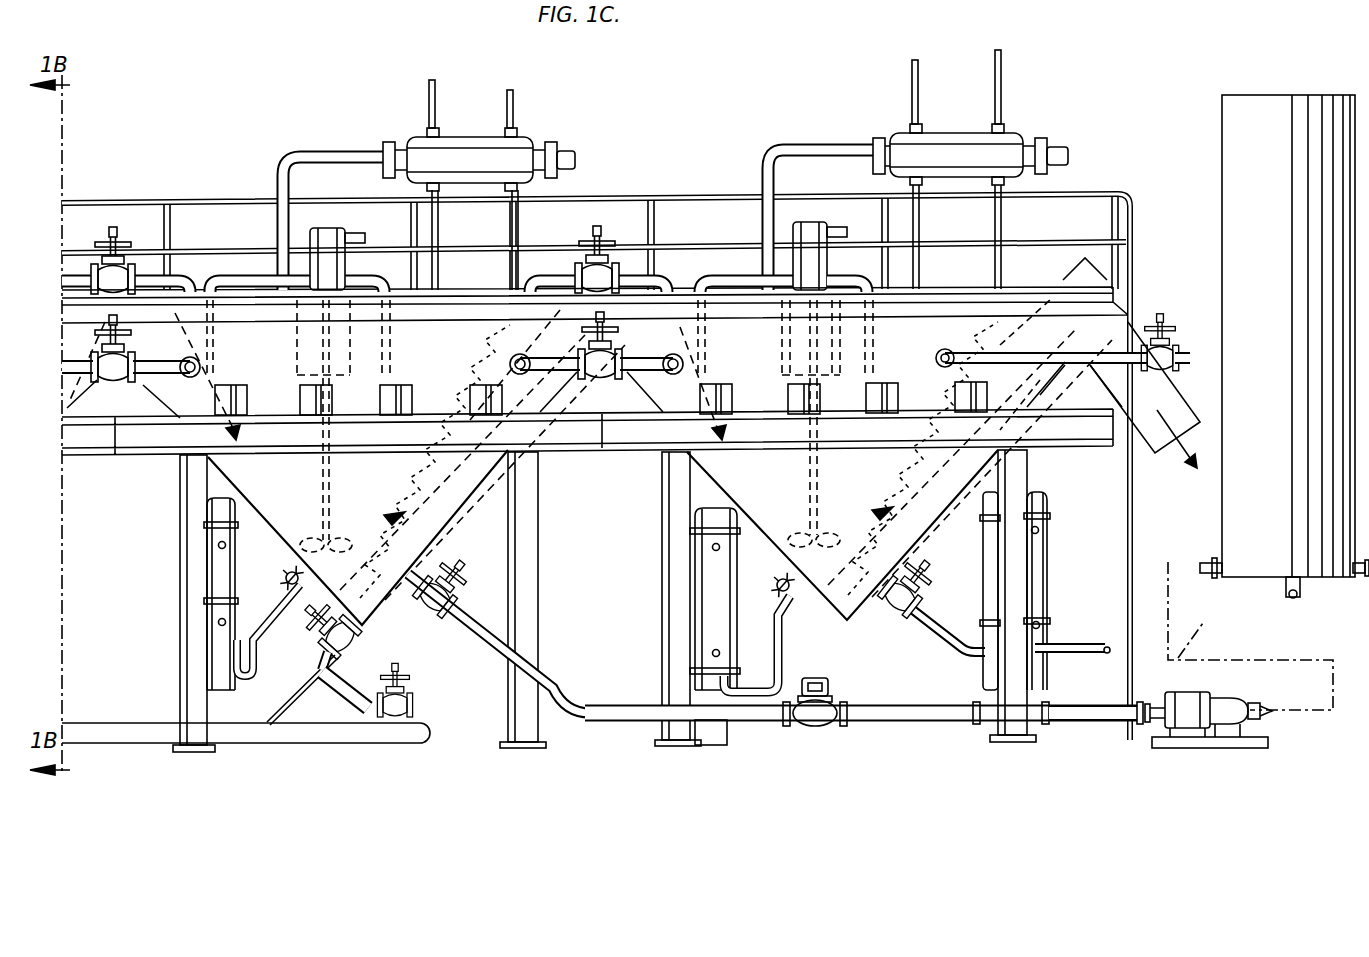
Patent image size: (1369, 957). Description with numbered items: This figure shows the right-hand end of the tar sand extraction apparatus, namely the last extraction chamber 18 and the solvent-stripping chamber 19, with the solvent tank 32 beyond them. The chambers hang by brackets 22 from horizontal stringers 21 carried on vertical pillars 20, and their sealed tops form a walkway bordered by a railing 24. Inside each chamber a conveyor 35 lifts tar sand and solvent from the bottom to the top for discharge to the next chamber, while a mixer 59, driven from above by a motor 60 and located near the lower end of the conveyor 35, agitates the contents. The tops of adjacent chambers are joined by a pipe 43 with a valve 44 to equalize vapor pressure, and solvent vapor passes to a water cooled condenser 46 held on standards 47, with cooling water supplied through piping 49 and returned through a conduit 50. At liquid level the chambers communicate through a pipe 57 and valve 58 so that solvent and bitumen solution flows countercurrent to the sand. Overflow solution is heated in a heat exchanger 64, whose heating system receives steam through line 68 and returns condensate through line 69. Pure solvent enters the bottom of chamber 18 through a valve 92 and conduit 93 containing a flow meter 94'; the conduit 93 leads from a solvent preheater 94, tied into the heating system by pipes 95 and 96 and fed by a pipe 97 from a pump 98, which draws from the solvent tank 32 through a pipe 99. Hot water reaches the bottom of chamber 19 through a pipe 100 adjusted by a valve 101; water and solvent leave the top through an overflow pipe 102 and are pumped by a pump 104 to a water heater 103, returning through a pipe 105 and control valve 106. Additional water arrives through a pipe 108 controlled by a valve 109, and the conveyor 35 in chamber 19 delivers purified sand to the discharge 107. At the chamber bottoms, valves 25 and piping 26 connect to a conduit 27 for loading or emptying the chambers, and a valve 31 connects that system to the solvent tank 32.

The extraction chamber 18 is at (242, 481).
The chamber 19 is at (728, 477).
The vertical pillar 20 is at (540, 527).
The horizontal stringer 21 is at (583, 450).
The bracket 22 is at (893, 380).
The railing 24 is at (690, 193).
The valve 25 is at (355, 645).
The piping 26 is at (348, 698).
The conduit 27 is at (340, 742).
The valve 31 is at (1299, 598).
The solvent tank 32 is at (1268, 268).
The conveyor 35 is at (1025, 330).
The pipe 43 is at (162, 278).
The valve 44 is at (118, 266).
The water cooled condenser 46 is at (480, 140).
The standard 47 is at (518, 236).
The piping 49 is at (430, 110).
The conduit 50 is at (513, 106).
The pipe 57 is at (155, 376).
The valve 58 is at (122, 360).
The mixer 59 is at (820, 535).
The motor 60 is at (805, 226).
The heat exchanger 64 is at (225, 572).
The steam line 68 is at (218, 545).
The condensate line 69 is at (218, 623).
The valve 92 is at (450, 603).
The conduit 93 is at (598, 710).
The solvent preheater 94 is at (1038, 596).
The flow meter 94' is at (837, 693).
The pipe 95 is at (1040, 531).
The pipe 96 is at (1040, 626).
The pipe 97 is at (1086, 705).
The pump 98 is at (1193, 694).
The pipe 99 is at (1360, 576).
The pipe 100 is at (940, 635).
The valve 101 is at (888, 615).
The overflow pipe 102 is at (852, 262).
The water heater 103 is at (732, 600).
The pump 104 is at (728, 730).
The pipe 105 is at (780, 657).
The control valve 106 is at (795, 600).
The discharge 107 is at (1195, 432).
The pipe 108 is at (1098, 356).
The valve 109 is at (1166, 347).